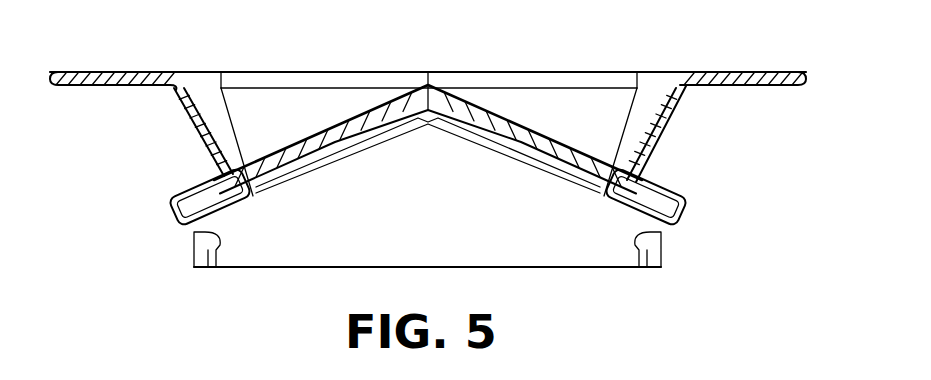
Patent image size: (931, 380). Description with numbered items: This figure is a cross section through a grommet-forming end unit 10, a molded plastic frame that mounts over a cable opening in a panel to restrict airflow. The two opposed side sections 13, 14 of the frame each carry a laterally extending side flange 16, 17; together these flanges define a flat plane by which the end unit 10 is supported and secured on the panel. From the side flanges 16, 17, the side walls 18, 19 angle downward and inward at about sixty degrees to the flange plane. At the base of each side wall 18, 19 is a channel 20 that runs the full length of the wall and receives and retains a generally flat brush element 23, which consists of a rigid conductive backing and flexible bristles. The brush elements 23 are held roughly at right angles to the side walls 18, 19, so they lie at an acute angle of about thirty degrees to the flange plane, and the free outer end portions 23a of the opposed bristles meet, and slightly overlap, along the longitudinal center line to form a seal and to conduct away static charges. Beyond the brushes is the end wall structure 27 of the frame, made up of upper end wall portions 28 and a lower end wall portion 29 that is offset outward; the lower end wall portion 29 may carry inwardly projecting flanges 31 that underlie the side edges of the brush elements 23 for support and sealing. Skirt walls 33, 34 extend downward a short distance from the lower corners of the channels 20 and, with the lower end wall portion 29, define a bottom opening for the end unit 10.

The grommet-forming end unit 10 is at (423, 223).
The side section 13 is at (716, 91).
The side section 14 is at (141, 88).
The side flange 16 is at (751, 72).
The side flange 17 is at (108, 70).
The side wall 18 is at (705, 112).
The side wall 19 is at (201, 138).
The channel 20 is at (185, 205).
The brush element 23 is at (334, 142).
The free outer end portion 23a is at (410, 103).
The end wall structure 27 is at (440, 172).
The upper end wall portion 28 is at (567, 108).
The lower end wall portion 29 is at (578, 250).
The inwardly projecting flange 31 is at (555, 180).
The skirt wall 33 is at (661, 258).
The skirt wall 34 is at (194, 255).